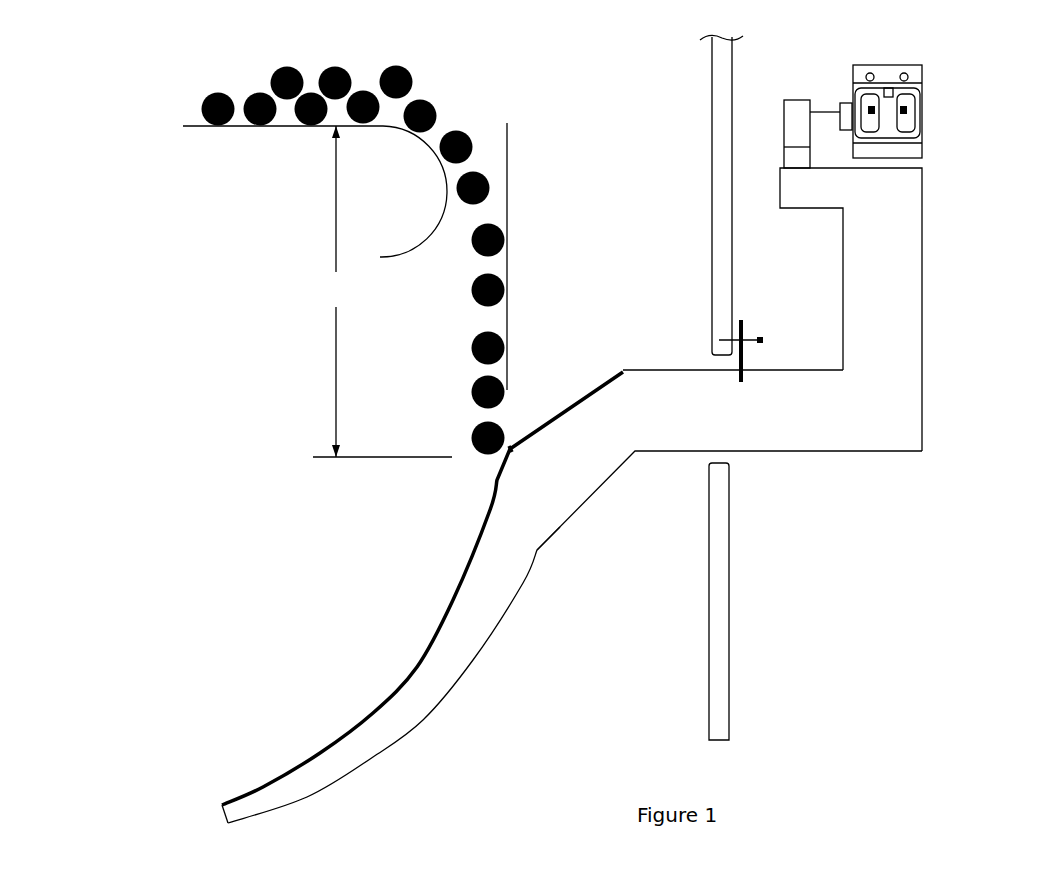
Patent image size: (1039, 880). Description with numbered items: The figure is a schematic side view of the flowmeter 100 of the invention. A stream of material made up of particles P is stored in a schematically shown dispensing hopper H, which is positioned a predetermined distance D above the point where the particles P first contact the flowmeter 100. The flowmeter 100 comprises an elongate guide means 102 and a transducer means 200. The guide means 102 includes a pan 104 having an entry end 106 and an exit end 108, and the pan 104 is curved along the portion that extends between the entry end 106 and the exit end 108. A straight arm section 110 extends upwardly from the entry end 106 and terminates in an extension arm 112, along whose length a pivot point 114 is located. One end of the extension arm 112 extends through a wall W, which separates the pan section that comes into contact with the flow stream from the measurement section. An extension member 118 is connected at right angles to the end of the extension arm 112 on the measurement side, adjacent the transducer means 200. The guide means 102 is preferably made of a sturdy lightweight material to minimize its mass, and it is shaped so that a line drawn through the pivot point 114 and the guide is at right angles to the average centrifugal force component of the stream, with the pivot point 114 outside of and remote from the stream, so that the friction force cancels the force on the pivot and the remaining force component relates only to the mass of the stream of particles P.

The flowmeter 100 is at (538, 539).
The elongate guide means 102 is at (490, 577).
The pan 104 is at (390, 690).
The entry end 106 is at (512, 437).
The exit end 108 is at (233, 793).
The straight arm section 110 is at (532, 510).
The extension arm 112 is at (680, 388).
The pivot point 114 is at (752, 348).
The extension member 118 is at (897, 307).
The transducer means 200 is at (927, 118).
The dispensing hopper H is at (188, 124).
The particles P is at (470, 127).
The predetermined distance D is at (382, 291).
The wall W is at (718, 677).